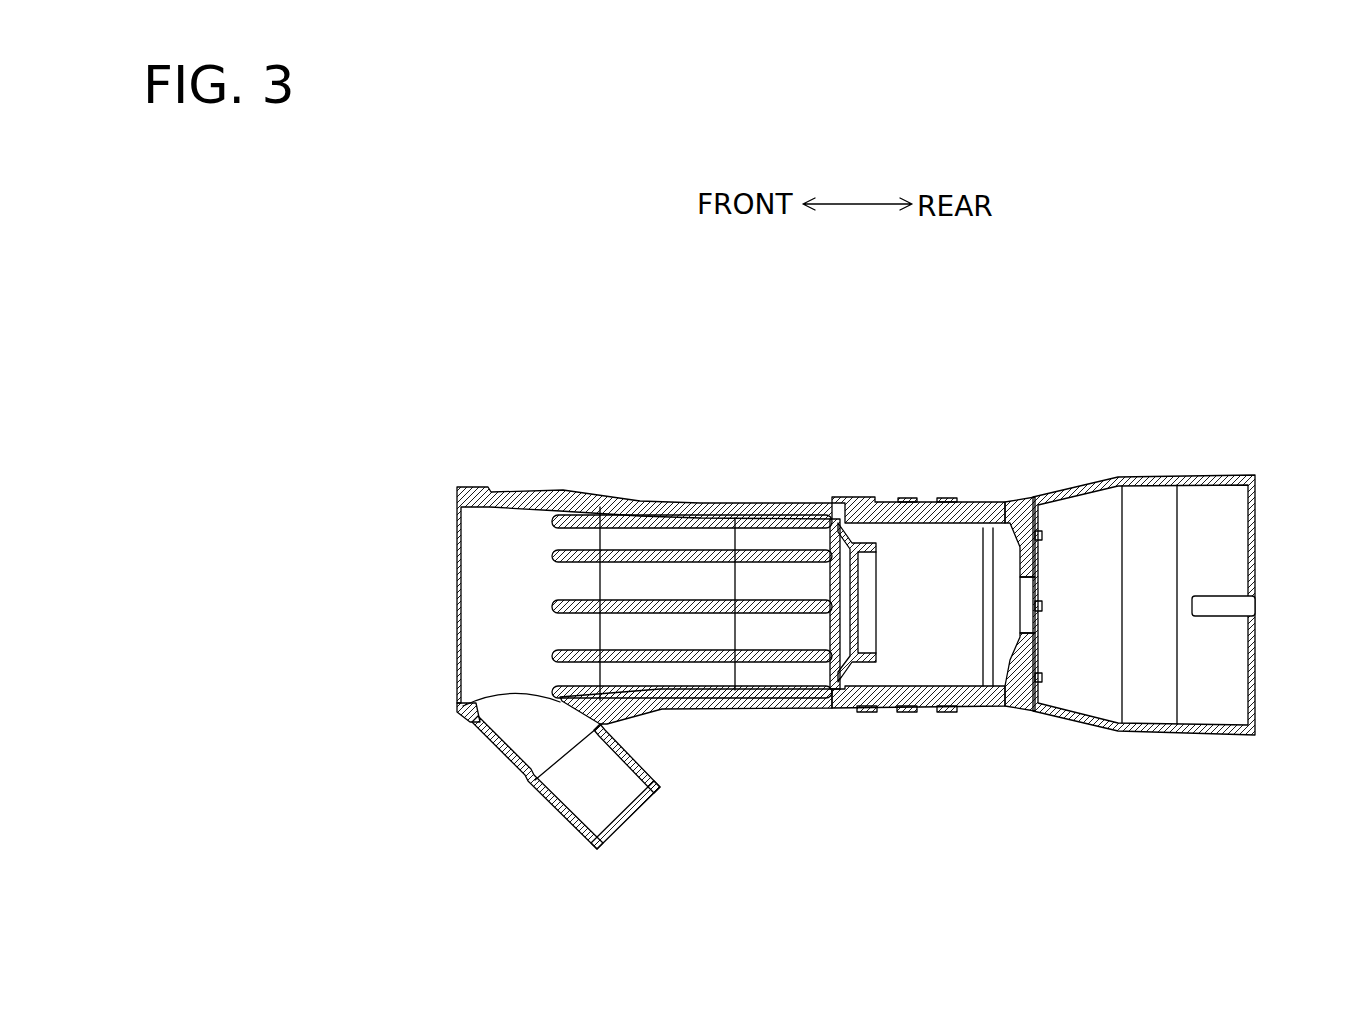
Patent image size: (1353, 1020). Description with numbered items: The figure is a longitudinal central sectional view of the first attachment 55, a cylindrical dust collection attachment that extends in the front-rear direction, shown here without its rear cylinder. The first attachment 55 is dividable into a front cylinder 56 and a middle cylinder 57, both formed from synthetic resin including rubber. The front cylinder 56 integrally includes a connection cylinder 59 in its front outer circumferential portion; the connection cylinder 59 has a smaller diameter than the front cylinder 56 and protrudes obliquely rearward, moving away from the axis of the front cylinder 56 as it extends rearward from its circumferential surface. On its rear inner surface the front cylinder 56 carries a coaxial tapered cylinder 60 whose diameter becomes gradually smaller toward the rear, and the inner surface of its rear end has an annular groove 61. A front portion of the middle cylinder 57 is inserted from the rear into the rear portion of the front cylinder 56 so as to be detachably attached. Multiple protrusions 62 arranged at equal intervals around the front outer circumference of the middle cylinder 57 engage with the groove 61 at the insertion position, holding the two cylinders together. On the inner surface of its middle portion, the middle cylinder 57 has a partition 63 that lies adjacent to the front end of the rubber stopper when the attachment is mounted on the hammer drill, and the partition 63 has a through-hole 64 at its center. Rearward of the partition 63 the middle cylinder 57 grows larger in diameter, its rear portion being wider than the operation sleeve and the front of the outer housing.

The first attachment 55 is at (925, 432).
The front cylinder 56 is at (702, 500).
The middle cylinder 57 is at (1118, 479).
The connection cylinder 59 is at (558, 817).
The tapered cylinder 60 is at (858, 706).
The annular groove 61 is at (945, 501).
The protrusions 62 is at (958, 502).
The partition 63 is at (1025, 500).
The through-hole 64 is at (1021, 707).